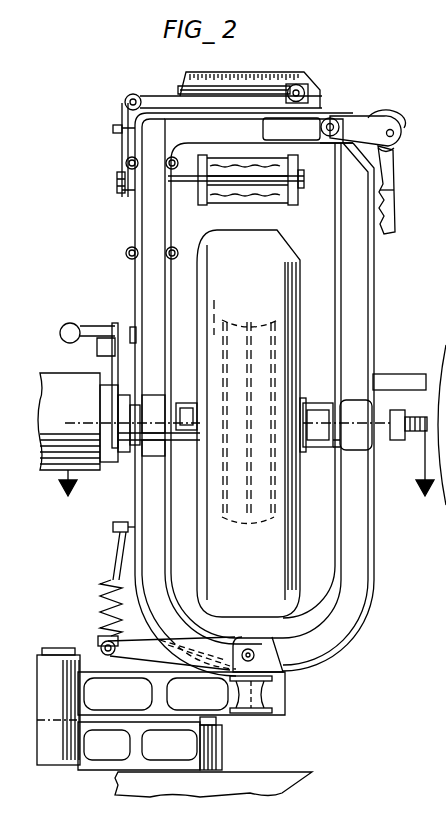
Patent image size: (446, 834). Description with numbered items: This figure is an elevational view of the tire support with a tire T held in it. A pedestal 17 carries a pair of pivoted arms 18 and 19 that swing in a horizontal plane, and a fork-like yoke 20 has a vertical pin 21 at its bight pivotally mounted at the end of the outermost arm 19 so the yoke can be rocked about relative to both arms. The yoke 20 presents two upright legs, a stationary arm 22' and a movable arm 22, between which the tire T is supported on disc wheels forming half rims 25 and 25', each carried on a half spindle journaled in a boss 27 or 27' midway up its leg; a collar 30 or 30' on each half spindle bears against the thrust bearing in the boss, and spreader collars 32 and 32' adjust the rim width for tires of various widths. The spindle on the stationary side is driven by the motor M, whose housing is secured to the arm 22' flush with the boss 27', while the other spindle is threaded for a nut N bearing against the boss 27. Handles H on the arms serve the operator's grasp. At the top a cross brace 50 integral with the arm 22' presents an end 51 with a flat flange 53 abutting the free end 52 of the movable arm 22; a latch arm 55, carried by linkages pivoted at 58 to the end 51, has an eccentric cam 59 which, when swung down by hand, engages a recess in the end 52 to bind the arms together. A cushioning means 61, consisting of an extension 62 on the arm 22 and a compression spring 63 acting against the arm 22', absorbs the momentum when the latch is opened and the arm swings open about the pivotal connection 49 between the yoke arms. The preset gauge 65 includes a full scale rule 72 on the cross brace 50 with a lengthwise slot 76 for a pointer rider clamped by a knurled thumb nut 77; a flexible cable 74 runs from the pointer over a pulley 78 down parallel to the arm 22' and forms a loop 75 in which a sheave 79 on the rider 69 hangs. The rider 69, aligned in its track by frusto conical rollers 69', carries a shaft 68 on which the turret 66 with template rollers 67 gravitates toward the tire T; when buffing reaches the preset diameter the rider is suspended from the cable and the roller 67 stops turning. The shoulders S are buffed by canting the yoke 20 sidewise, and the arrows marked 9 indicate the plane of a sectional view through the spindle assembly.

The pedestal 17 is at (255, 778).
The pivoted arm 18 is at (118, 752).
The pivoted arm 19 is at (106, 692).
The yoke 20 is at (354, 639).
The vertical pin 21 is at (265, 712).
The movable arm 22 is at (374, 361).
The stationary arm 22' is at (224, 344).
The half rim 25 is at (250, 411).
The half rim 25' is at (231, 407).
The boss 27 is at (356, 413).
The boss 27' is at (153, 402).
The collar 30 is at (346, 450).
The collar 30' is at (159, 454).
The spreader collar 32 is at (316, 414).
The spreader collar 32' is at (184, 400).
The pivot pin 49 is at (254, 658).
The cross brace 50 is at (233, 137).
The end of cross brace 51 is at (333, 145).
The free end of movable arm 52 is at (395, 150).
The flat flange 53 is at (355, 113).
The latch arm 55 is at (396, 168).
The pivot connection 58 is at (331, 118).
The cam formation 59 is at (386, 117).
The cushioning means 61 is at (97, 592).
The extension 62 is at (152, 648).
The compression spring 63 is at (100, 617).
The preset gauge 65 is at (280, 66).
The turret 66 is at (200, 205).
The roller 67 is at (295, 200).
The shaft 68 is at (301, 192).
The rider 69 is at (134, 190).
The frusto conical rollers 69' is at (139, 260).
The scale 72 is at (245, 74).
The flexible cable 74 is at (160, 96).
The loop 75 is at (120, 156).
The slot 76 is at (267, 98).
The thumb nut 77 is at (302, 90).
The pulley 78 is at (128, 97).
The sheave 79 is at (117, 190).
The section arrows 9 is at (252, 433).
The handle H is at (72, 322).
The motor M is at (86, 408).
The nut N is at (403, 415).
The shoulders S is at (290, 250).
The tire T is at (274, 563).